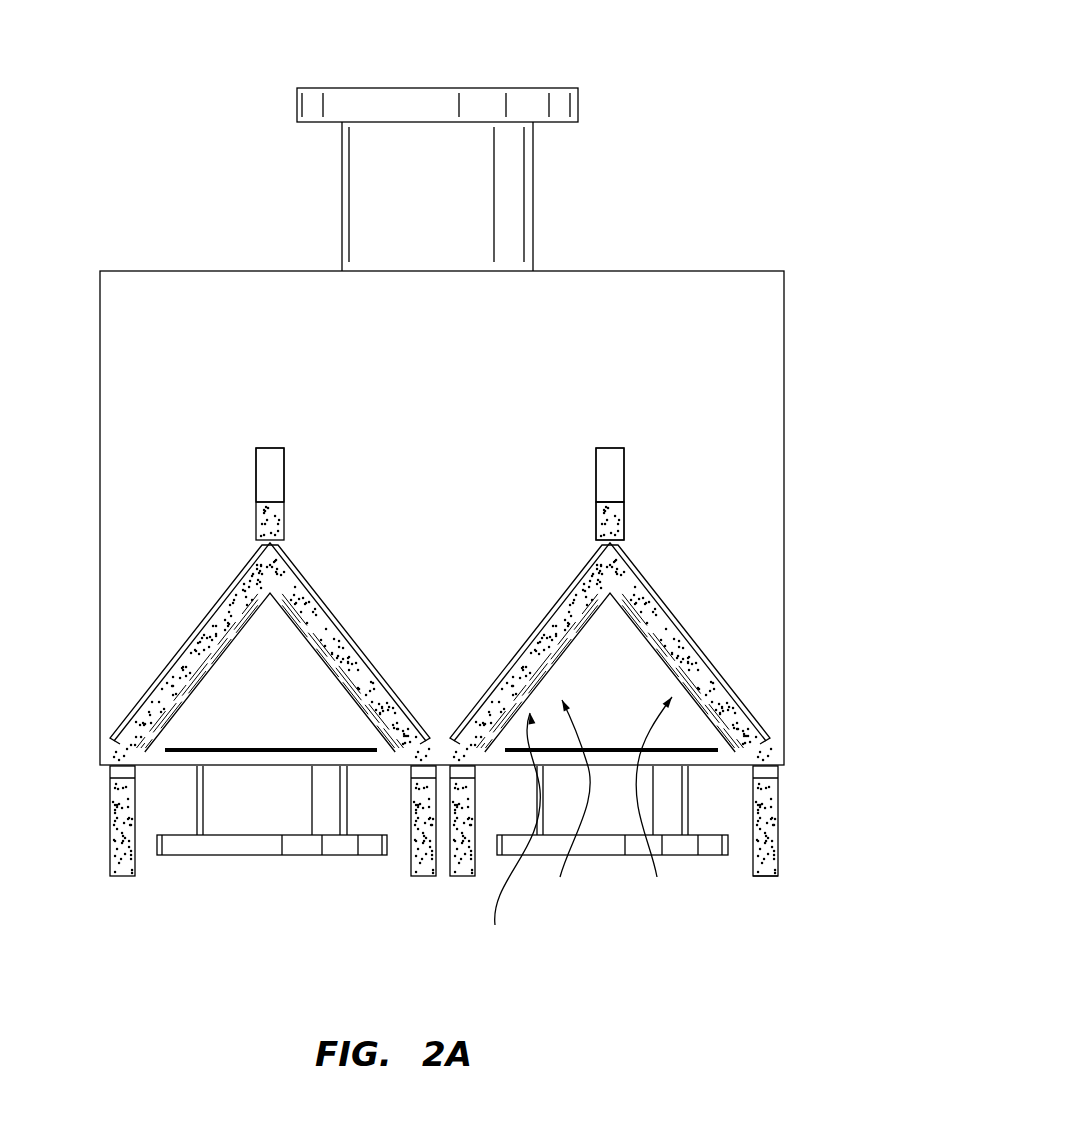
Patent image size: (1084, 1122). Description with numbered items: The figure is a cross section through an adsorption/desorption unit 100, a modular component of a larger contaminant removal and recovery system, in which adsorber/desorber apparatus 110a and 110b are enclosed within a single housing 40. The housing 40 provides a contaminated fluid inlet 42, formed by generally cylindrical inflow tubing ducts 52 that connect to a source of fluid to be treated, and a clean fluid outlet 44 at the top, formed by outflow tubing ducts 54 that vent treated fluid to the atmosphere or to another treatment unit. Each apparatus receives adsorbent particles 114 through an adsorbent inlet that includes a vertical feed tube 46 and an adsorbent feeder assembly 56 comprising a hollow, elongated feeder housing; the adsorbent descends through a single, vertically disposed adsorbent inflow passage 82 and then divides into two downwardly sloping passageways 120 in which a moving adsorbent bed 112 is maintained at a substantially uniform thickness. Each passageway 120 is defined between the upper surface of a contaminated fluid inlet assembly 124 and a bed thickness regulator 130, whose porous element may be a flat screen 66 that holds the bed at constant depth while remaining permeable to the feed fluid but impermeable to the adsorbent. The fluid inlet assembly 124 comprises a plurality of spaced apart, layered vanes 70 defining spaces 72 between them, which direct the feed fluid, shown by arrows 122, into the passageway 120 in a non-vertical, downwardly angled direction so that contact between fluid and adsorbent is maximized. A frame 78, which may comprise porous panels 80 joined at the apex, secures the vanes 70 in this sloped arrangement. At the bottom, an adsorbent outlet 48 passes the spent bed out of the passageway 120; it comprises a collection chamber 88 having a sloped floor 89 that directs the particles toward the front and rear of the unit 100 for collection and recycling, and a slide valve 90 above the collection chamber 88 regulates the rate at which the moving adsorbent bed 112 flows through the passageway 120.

The adsorption/desorption unit 100 is at (657, 137).
The housing 40 is at (712, 268).
The clean fluid outlet 44 is at (372, 192).
The outflow tubing ducts 54 is at (478, 137).
The inlet tube 46 is at (297, 465).
The adsorbent feeder assembly 56 is at (253, 476).
The adsorbent particles 114 is at (278, 513).
The adsorbent inflow passage 82 is at (627, 518).
The adsorber/desorber apparatus 110a is at (668, 597).
The adsorber/desorber apparatus 110b is at (350, 577).
The bed thickness regulator 130 is at (665, 625).
The flat screen 66 is at (660, 577).
The passageway 120 is at (723, 647).
The moving adsorbent bed 112 is at (671, 671).
The spaces 72 is at (745, 672).
The vanes 70 is at (265, 587).
The frame 78 is at (671, 649).
The porous panels 80 is at (660, 670).
The adsorbent outlet 48 is at (770, 748).
The slide valve 90 is at (775, 793).
The collection chamber 88 is at (777, 838).
The sloped floor 89 is at (765, 875).
The contaminated fluid inlet 42 is at (248, 857).
The inflow tubing ducts 52 is at (303, 813).
The arrows 122 is at (609, 803).
The contaminated fluid inlet assembly 124 is at (505, 831).